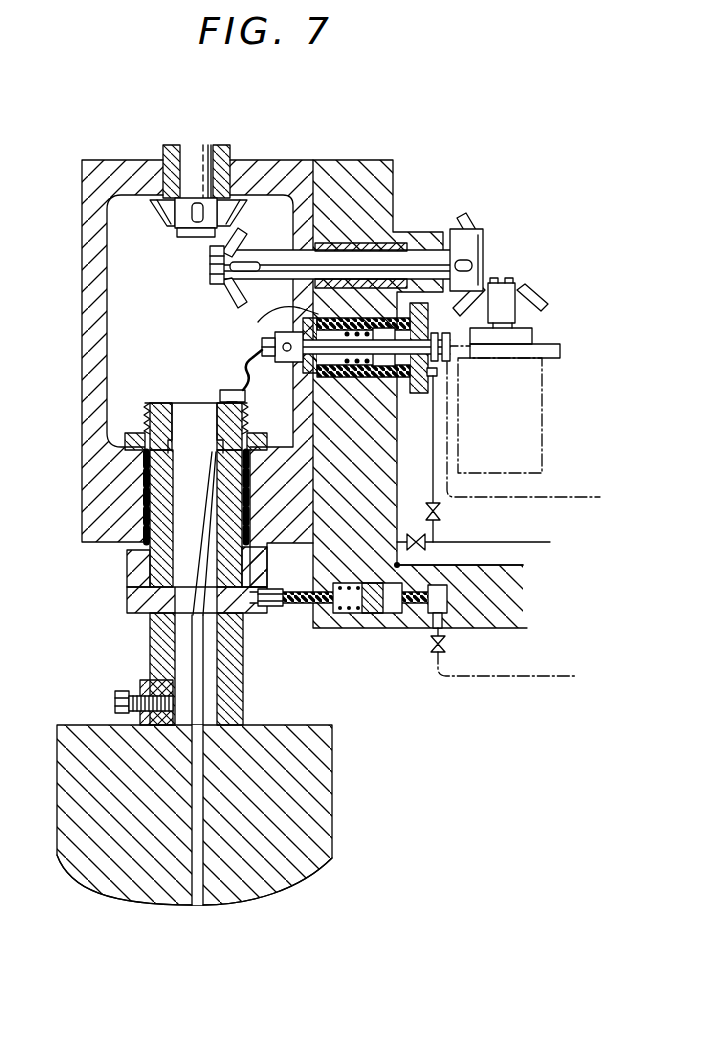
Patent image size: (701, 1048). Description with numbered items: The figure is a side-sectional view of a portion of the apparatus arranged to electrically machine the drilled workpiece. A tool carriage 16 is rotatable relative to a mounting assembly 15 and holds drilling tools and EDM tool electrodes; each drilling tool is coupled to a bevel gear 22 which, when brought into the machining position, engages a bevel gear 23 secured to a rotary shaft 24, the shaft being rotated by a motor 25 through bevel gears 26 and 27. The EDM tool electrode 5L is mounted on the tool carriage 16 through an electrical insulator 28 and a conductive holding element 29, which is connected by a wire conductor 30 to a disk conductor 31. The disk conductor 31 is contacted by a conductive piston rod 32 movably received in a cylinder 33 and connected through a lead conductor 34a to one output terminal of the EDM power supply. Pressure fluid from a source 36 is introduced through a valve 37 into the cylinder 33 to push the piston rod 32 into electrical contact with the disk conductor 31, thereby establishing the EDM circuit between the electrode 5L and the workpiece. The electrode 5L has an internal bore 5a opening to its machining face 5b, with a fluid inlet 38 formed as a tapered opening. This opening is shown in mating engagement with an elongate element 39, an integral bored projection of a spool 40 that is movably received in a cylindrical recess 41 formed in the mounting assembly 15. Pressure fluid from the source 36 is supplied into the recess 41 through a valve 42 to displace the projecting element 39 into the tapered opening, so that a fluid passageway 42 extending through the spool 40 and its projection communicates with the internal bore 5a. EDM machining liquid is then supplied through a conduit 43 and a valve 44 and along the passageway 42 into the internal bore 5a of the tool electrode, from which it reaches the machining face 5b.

The mounting assembly 15 is at (385, 165).
The tool carriage 16 is at (82, 531).
The bevel gear 22 is at (166, 222).
The bevel gear 23 is at (222, 300).
The rotary shaft 24 is at (443, 252).
The motor 25 is at (548, 422).
The bevel gear 26 is at (480, 226).
The bevel gear 27 is at (540, 300).
The electrical insulator 28 is at (128, 553).
The conductive holding element 29 is at (128, 588).
The wire conductor 30 is at (242, 378).
The disk conductor 31 is at (262, 322).
The conductive piston rod 32 is at (357, 357).
The cylinder 33 is at (455, 353).
The lead conductor 34a is at (538, 492).
The pressure fluid source 36 is at (540, 545).
The valve 37 is at (442, 510).
The fluid inlet 38 is at (270, 606).
The elongate element 39 is at (282, 585).
The spool 40 is at (370, 612).
The cylindrical recess 41 is at (397, 612).
The fluid passageway and valve 42 is at (408, 538).
The conduit 43 is at (530, 673).
The valve 44 is at (447, 640).
The EDM tool electrode 5L is at (333, 790).
The internal bore 5a is at (205, 896).
The machining face 5b is at (305, 870).